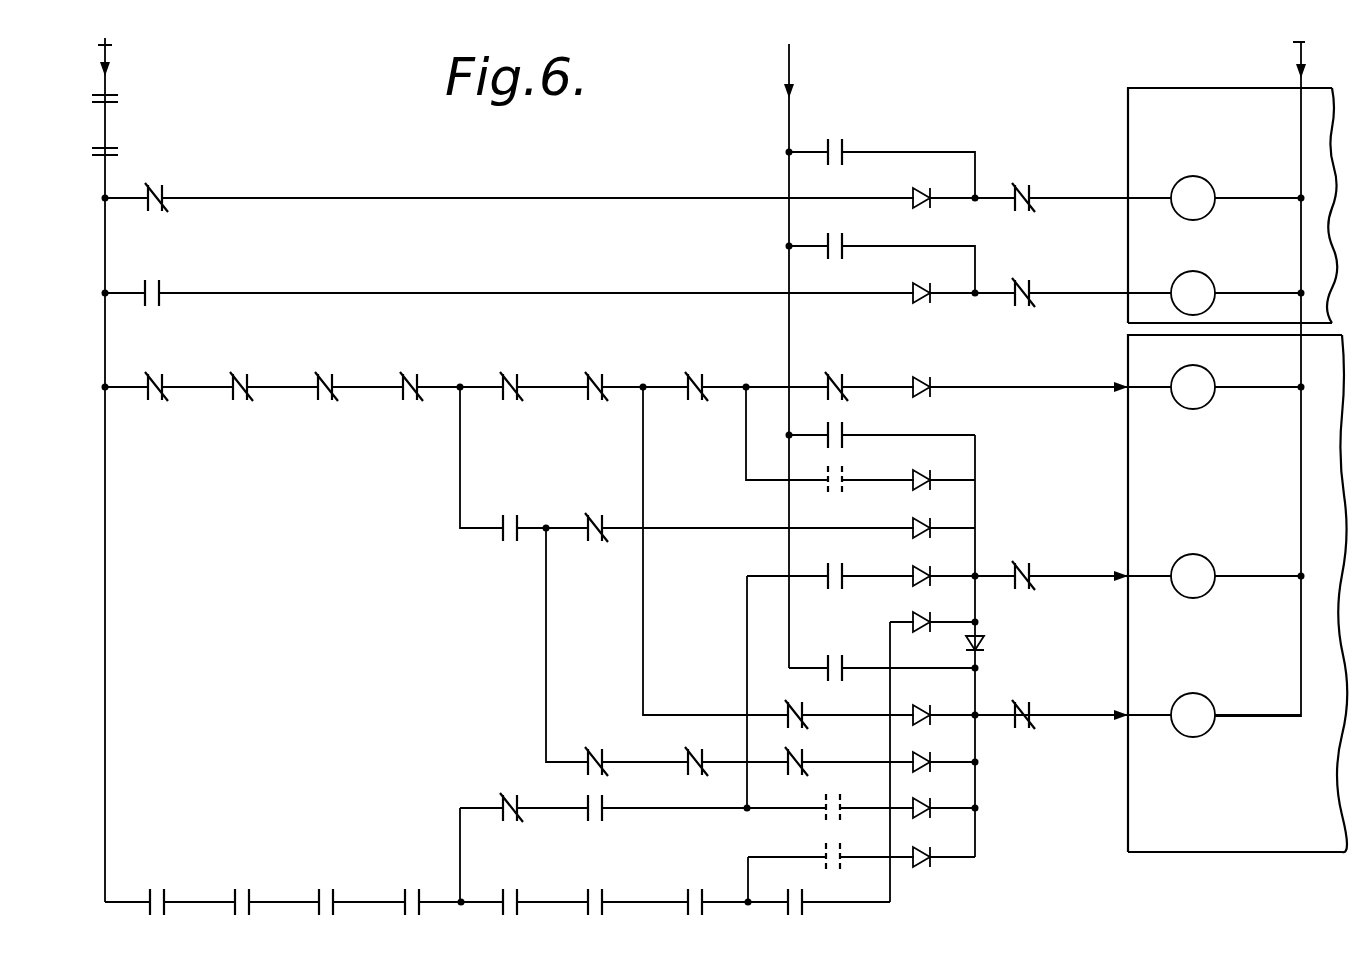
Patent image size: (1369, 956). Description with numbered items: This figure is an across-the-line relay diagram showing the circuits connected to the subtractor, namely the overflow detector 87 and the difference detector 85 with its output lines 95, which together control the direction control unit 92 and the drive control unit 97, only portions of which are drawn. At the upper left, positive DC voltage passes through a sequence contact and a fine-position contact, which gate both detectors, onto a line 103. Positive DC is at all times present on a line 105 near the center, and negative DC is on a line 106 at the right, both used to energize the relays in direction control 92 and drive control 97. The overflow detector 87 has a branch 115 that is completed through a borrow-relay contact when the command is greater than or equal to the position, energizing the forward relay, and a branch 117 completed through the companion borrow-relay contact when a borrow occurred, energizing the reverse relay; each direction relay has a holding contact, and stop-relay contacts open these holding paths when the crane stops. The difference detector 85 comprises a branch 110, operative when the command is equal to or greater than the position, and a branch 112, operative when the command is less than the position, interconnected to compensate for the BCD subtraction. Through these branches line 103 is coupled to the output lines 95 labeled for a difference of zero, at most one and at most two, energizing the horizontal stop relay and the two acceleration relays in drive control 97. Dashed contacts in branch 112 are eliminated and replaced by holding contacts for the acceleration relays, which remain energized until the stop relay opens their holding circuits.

The line 103 is at (105, 220).
The line 105 is at (789, 172).
The line 106 is at (1300, 52).
The branch 115 is at (545, 190).
The branch 117 is at (545, 285).
The overflow detector 87 is at (680, 253).
The branch 110 is at (378, 437).
The difference detector 85 is at (442, 660).
The branch 112 is at (372, 853).
The direction control unit 92 is at (1273, 248).
The drive control unit 97 is at (1238, 815).
The output lines 95 is at (1090, 735).